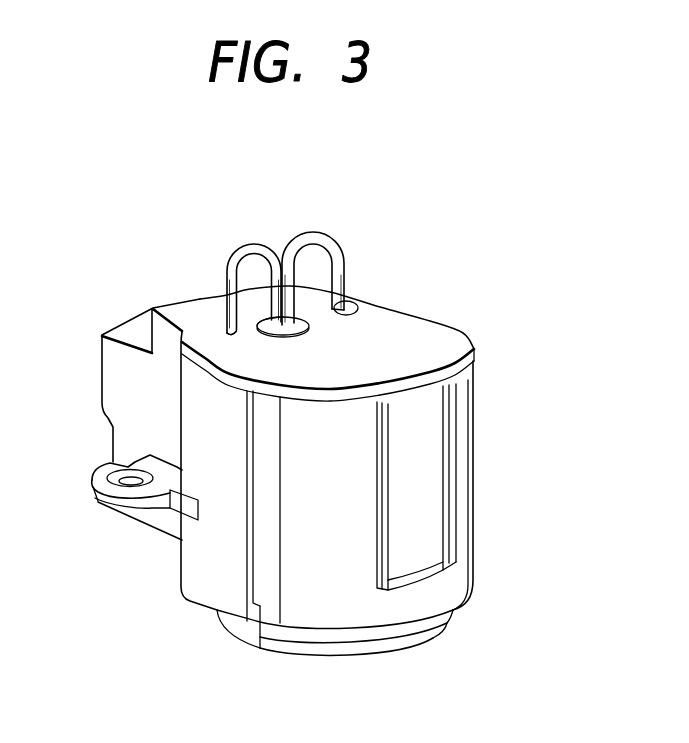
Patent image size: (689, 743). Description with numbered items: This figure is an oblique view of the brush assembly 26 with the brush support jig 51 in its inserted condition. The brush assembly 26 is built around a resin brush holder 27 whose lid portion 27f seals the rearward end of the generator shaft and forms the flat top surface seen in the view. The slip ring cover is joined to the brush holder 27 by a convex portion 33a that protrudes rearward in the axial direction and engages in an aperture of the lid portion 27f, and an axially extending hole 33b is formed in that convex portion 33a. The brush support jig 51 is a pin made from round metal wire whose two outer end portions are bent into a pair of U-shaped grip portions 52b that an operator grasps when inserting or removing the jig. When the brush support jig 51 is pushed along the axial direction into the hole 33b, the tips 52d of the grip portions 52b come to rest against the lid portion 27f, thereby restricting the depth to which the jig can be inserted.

The brush assembly 26 is at (447, 218).
The brush holder 27 is at (463, 443).
The lid portion 27f is at (437, 349).
The convex portion 33a is at (307, 333).
The hole 33b is at (264, 327).
The brush support jig 51 is at (315, 236).
The grip portions 52b is at (300, 237).
The tips 52d is at (346, 305).